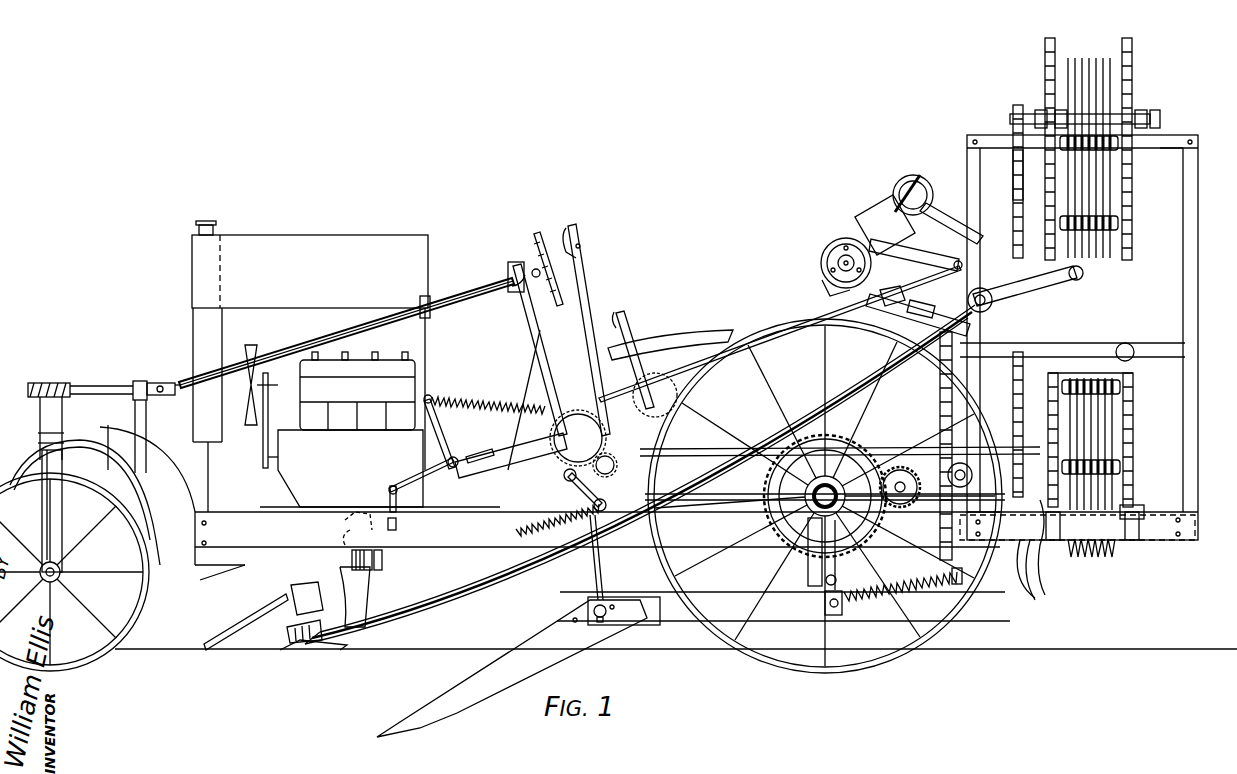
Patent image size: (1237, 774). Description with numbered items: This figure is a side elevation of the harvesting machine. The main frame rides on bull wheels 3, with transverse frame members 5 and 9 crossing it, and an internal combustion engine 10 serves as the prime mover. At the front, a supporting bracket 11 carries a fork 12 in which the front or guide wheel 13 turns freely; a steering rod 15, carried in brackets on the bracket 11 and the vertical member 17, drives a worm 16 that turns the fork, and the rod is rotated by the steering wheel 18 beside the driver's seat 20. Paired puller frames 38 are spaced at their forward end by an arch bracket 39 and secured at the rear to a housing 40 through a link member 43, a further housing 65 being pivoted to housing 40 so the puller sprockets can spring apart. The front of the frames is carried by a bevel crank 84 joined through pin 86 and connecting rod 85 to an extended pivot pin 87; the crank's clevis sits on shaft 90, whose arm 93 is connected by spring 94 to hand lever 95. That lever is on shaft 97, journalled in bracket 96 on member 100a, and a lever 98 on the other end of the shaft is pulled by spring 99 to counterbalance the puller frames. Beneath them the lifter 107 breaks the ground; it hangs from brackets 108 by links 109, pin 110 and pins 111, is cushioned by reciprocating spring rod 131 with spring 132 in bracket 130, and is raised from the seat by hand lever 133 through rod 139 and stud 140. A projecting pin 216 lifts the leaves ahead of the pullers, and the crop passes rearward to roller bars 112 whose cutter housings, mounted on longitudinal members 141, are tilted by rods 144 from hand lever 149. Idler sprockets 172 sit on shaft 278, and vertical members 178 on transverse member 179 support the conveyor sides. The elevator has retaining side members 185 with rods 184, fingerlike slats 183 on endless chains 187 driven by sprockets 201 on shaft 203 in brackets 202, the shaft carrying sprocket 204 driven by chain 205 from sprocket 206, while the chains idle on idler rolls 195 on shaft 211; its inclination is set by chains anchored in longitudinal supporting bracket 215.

The bull wheels 3 is at (790, 660).
The transverse frame member 5 is at (815, 565).
The transverse frame member 9 is at (968, 540).
The internal combustion engine 10 is at (385, 360).
The supporting bracket 11 is at (140, 455).
The fork 12 is at (42, 508).
The front or guide wheel 13 is at (150, 590).
The steering rod 15 is at (118, 384).
The worm 16 is at (62, 382).
The vertical member 17 is at (428, 360).
The steering wheel 18 is at (536, 236).
The driver's seat 20 is at (688, 348).
The puller frames 38 is at (438, 592).
The arch bracket 39 is at (382, 558).
The housing 40 is at (818, 254).
The link member 43 is at (912, 272).
The housing 65 is at (898, 182).
The bevel crank 84 is at (415, 482).
The connecting rod 85 is at (388, 492).
The pin 86 is at (392, 487).
The extended pivot pin 87 is at (394, 530).
The shaft 90 is at (448, 462).
The arm 93 is at (432, 424).
The spring 94 is at (480, 395).
The hand lever 95 is at (545, 365).
The bracket 96 is at (578, 418).
The shaft 97 is at (567, 478).
The lever 98 is at (600, 486).
The spring 99 is at (540, 520).
The member 100a is at (580, 468).
The lifter or ground breaking means 107 is at (447, 698).
The brackets 108 is at (834, 568).
The links 109 is at (842, 612).
The pin 110 is at (838, 614).
The pins 111 is at (825, 605).
The roller bars 112 is at (1022, 292).
The bracket 130 is at (987, 465).
The reciprocating spring rod 131 is at (954, 584).
The spring 132 is at (912, 600).
The hand lever 133 is at (580, 233).
The rod 139 is at (597, 585).
The stud 140 is at (606, 618).
The longitudinal members 141 is at (1160, 345).
The rods 144 is at (778, 340).
The hand lever 149 is at (640, 312).
The idler sprockets 172 is at (895, 465).
The vertical members 178 is at (1054, 547).
The transverse member 179 is at (1046, 570).
The fingerlike slats 183 is at (1080, 565).
The rods 184 is at (1095, 44).
The retaining side members 185 is at (1045, 45).
The endless chains 187 is at (1137, 200).
The idler rolls 195 is at (1135, 510).
The sprockets 201 is at (1130, 112).
The brackets 202 is at (1035, 108).
The shaft 203 is at (1105, 118).
The sprocket 204 is at (1013, 118).
The chain 205 is at (1010, 190).
The sprocket 206 is at (1046, 520).
The shaft 211 is at (1122, 542).
The longitudinal supporting bracket 215 is at (1180, 130).
The projecting pin 216 is at (228, 643).
The shaft 278 is at (918, 465).